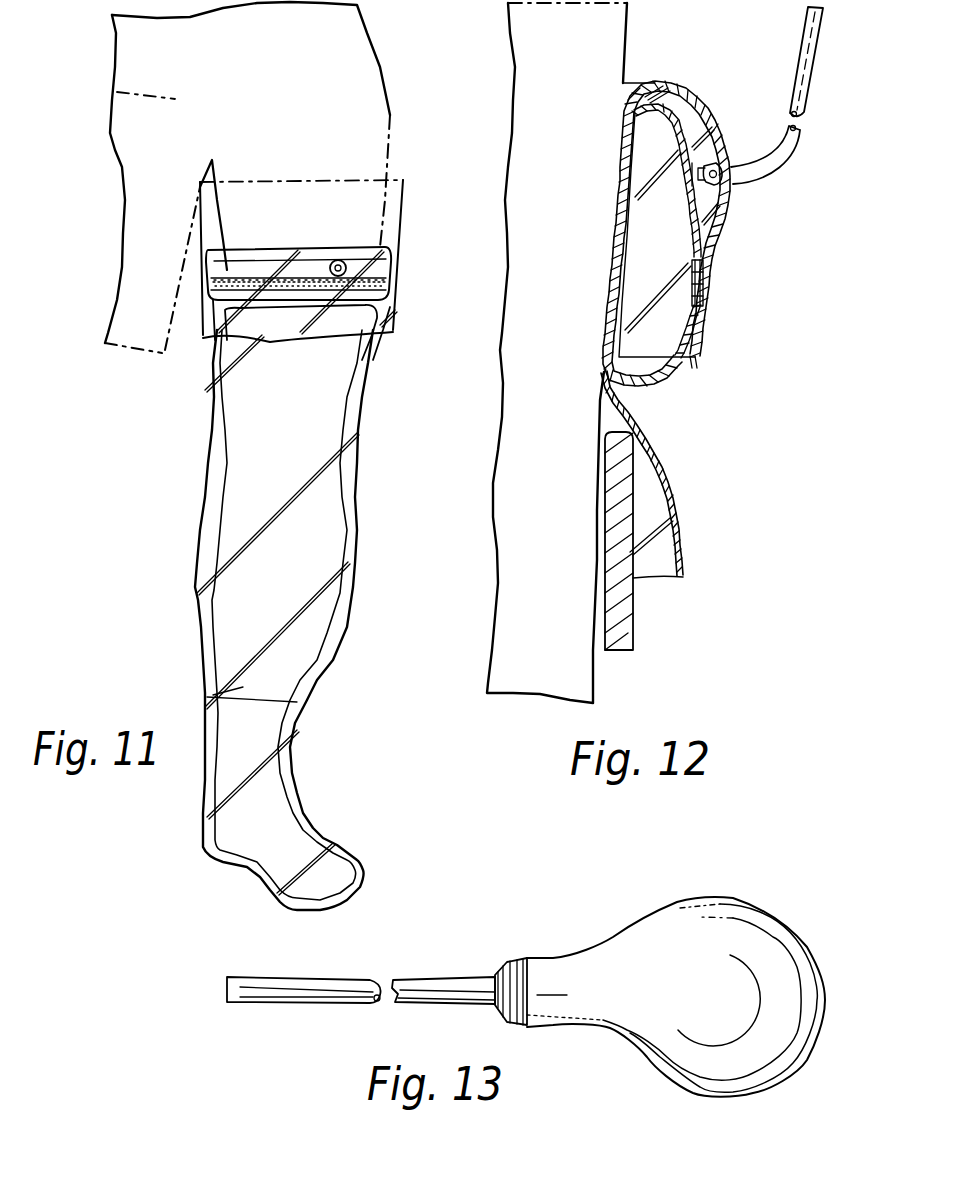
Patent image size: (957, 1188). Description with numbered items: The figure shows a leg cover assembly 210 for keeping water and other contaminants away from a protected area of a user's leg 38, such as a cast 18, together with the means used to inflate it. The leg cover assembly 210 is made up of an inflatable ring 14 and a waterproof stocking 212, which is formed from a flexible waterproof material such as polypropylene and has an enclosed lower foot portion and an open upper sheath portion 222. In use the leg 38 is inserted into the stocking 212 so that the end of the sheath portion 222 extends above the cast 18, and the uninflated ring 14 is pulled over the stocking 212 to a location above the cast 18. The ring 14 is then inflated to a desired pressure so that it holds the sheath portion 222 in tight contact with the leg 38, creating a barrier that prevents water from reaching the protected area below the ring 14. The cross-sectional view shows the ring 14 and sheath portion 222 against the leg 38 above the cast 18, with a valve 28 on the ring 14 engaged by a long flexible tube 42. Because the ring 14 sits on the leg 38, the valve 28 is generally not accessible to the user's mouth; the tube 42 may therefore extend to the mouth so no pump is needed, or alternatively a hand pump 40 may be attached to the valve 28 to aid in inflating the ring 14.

In FIG. 11, the inflatable ring 14 is at (375, 262).
In FIG. 12, the inflatable ring 14 is at (652, 385).
In FIG. 11, the cast 18 is at (220, 695).
In FIG. 12, the cast 18 is at (617, 630).
In FIG. 12, the valve 28 is at (712, 140).
In FIG. 11, the leg 38 is at (268, 719).
In FIG. 12, the leg 38 is at (533, 677).
In FIG. 13, the hand pump 40 is at (700, 1103).
In FIG. 12, the long flexible tube 42 is at (805, 107).
In FIG. 11, the leg cover assembly 210 is at (203, 410).
In FIG. 11, the waterproof stocking 212 is at (353, 477).
In FIG. 12, the waterproof stocking 212 is at (685, 560).
In FIG. 11, the open upper sheath portion 222 is at (383, 327).
In FIG. 12, the open upper sheath portion 222 is at (667, 80).